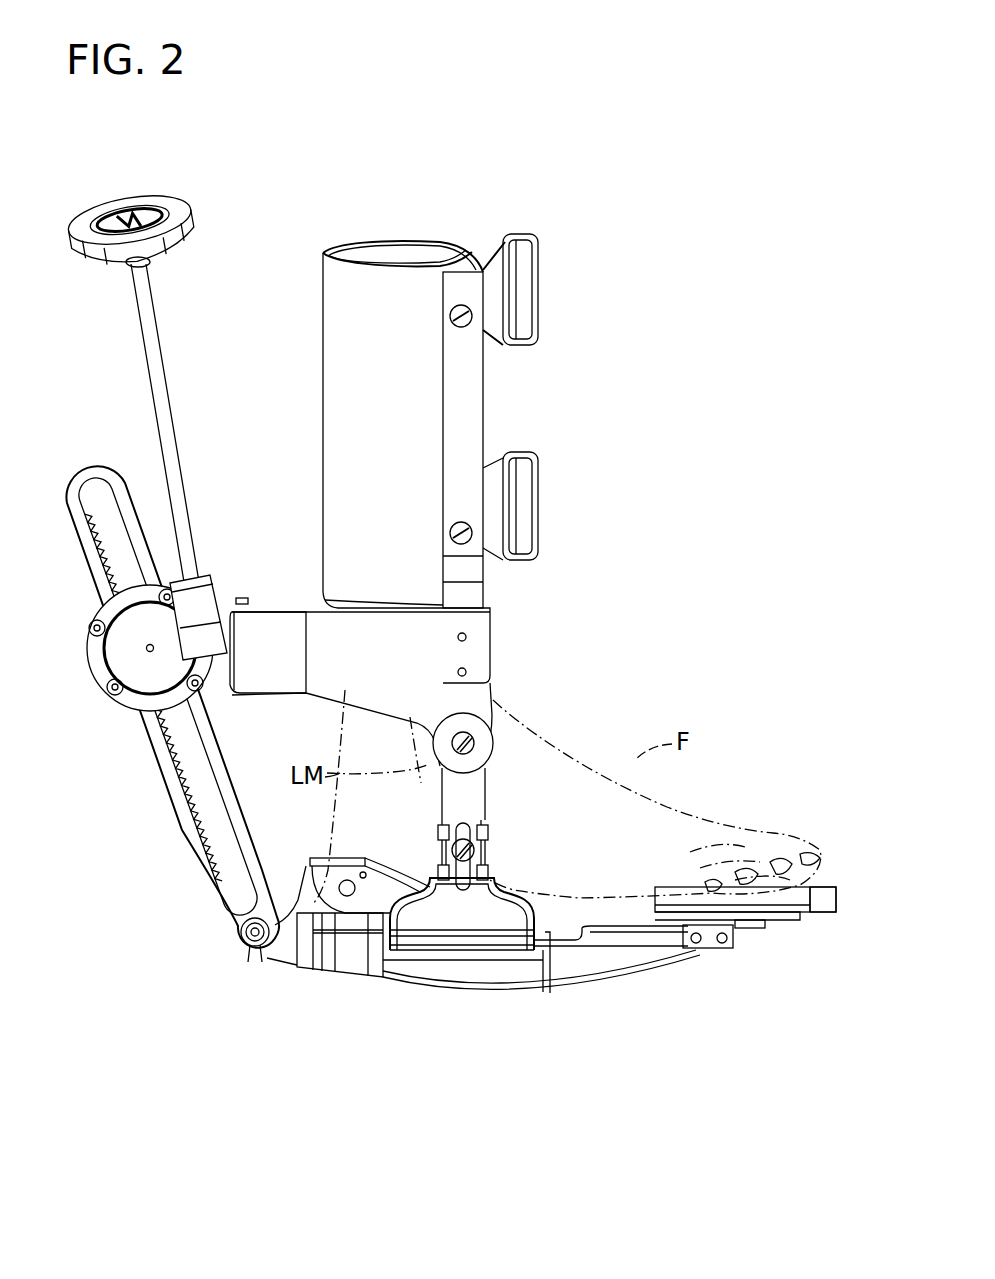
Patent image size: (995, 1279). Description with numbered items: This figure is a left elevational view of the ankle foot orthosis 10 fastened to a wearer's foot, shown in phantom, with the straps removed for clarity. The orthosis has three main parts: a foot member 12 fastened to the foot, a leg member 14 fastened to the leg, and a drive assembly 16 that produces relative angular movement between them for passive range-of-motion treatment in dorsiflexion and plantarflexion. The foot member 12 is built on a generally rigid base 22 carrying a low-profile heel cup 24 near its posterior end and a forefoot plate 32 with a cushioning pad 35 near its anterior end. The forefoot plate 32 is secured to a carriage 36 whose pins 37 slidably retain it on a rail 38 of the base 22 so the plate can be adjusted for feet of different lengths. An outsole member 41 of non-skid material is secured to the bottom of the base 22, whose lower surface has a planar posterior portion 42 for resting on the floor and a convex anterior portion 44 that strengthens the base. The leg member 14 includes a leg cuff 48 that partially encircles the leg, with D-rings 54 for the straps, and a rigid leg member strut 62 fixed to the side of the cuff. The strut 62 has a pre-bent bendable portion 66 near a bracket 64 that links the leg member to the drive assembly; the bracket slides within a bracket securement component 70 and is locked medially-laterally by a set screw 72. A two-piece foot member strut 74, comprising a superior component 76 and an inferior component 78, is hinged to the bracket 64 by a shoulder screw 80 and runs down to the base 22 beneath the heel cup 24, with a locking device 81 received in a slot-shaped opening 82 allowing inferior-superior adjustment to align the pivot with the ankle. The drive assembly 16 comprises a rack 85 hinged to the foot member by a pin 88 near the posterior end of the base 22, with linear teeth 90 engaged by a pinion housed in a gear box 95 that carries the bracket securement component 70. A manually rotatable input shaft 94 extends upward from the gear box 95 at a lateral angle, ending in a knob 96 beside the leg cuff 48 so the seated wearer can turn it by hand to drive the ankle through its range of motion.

The ankle foot orthosis 10 is at (583, 158).
The foot member 12 is at (640, 1030).
The leg member 14 is at (543, 385).
The drive assembly 16 is at (168, 707).
The base 22 is at (541, 1016).
The heel cup 24 is at (320, 900).
The forefoot plate 32 is at (765, 934).
The pad 35 is at (825, 886).
The carriage 36 is at (784, 922).
The pins 37 is at (718, 940).
The rail 38 is at (600, 928).
The outsole member 41 is at (470, 990).
The posterior portion 42 is at (348, 978).
The anterior portion 44 is at (662, 972).
The leg cuff 48 is at (355, 362).
The D-ring 54 is at (515, 238).
The leg member strut 62 is at (503, 477).
The bracket 64 is at (323, 697).
The bendable portion 66 is at (458, 602).
The bracket securement component 70 is at (262, 610).
The set screw 72 is at (242, 597).
The foot member strut 74 is at (524, 764).
The superior component 76 is at (493, 758).
The inferior component 78 is at (425, 925).
The shoulder screw 80 is at (470, 733).
The locking device 81 is at (455, 852).
The slot-shaped opening 82 is at (440, 813).
The rack 85 is at (190, 866).
The pin 88 is at (245, 950).
The teeth 90 is at (188, 760).
The input shaft 94 is at (143, 340).
The gear box 95 is at (98, 672).
The knob 96 is at (170, 205).